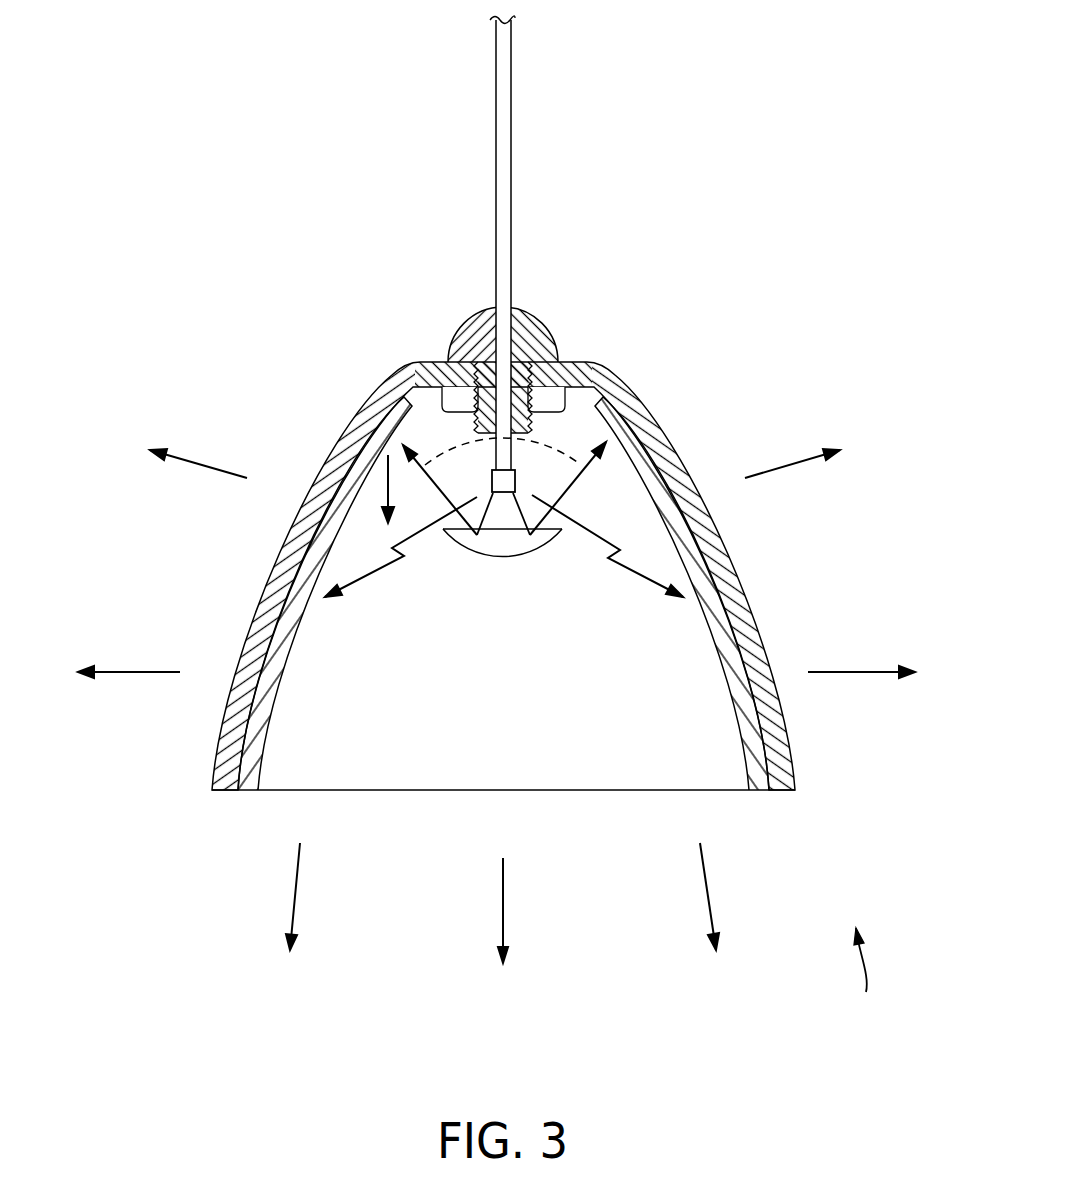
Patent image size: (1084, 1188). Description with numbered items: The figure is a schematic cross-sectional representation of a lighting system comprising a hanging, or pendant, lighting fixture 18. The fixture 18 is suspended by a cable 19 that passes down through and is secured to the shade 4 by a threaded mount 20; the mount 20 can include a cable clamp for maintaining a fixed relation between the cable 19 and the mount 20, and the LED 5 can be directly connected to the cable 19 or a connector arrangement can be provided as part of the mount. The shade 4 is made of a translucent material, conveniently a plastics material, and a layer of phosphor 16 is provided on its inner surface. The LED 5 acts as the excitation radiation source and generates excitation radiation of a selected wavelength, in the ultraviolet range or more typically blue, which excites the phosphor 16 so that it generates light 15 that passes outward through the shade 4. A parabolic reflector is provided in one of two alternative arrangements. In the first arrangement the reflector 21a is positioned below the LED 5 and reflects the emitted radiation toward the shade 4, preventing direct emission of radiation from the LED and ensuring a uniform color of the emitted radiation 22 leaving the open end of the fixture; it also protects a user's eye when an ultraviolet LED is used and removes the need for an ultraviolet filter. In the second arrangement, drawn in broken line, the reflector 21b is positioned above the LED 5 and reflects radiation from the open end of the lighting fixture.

The shade 4 is at (738, 575).
The light emitting diode 5 is at (515, 480).
The light 15 is at (781, 465).
The phosphor 16 is at (752, 758).
The hanging lighting fixture 18 is at (877, 978).
The cable 19 is at (504, 172).
The threaded mount 20 is at (533, 312).
The parabolic reflector 21a is at (497, 557).
The parabolic reflector 21b is at (453, 445).
The emitted radiation 22 is at (508, 904).